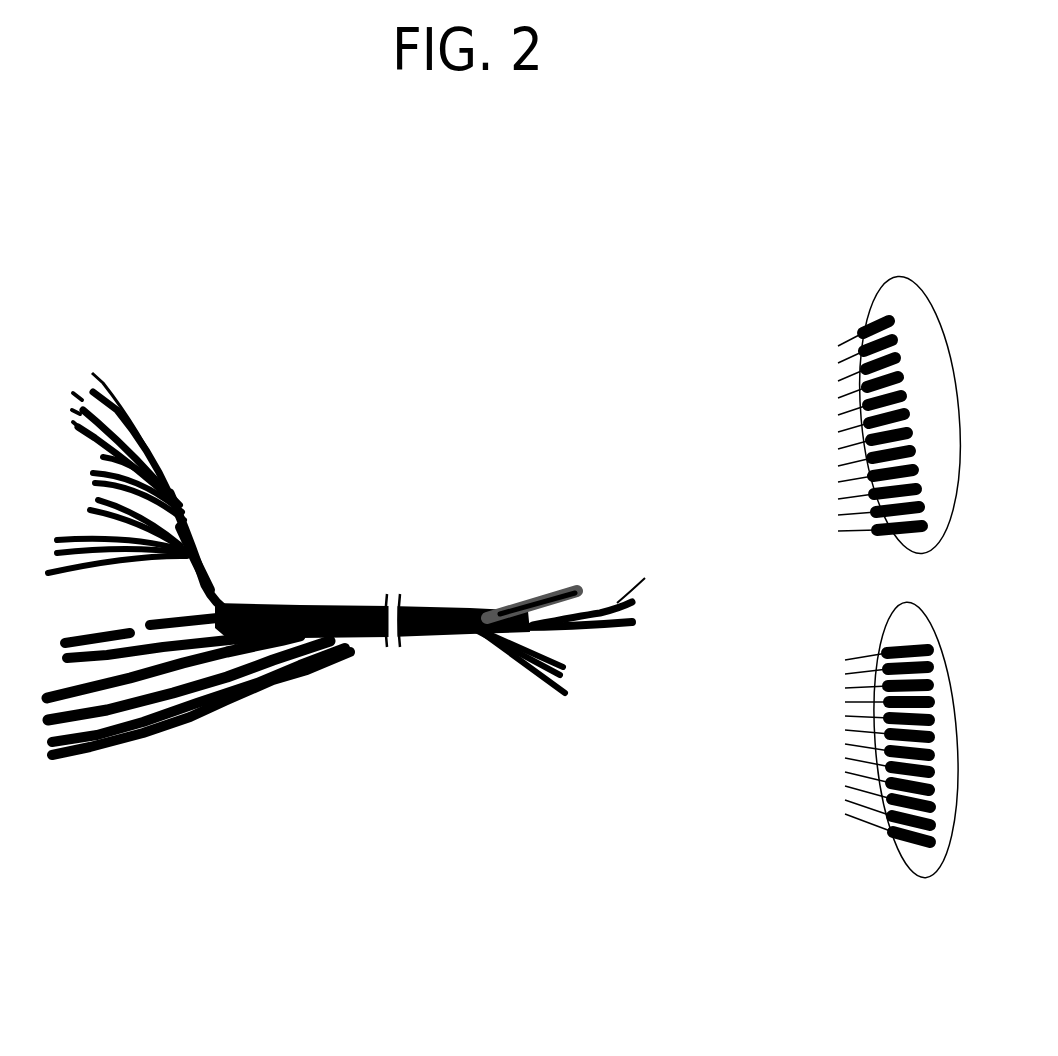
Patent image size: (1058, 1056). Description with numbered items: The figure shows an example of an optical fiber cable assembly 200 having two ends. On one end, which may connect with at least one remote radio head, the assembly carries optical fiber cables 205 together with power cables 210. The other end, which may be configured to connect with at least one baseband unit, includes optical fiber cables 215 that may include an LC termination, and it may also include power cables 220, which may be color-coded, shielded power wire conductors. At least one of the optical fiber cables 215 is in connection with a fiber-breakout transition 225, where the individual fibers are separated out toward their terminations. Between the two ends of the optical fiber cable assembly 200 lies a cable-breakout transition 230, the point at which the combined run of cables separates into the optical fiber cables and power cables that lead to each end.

The optical fiber cable assembly 200 is at (509, 550).
The optical fiber cables 205 is at (133, 433).
The power cables 210 is at (163, 708).
The optical fiber cables 215 is at (752, 410).
The power cables 220 is at (557, 593).
The fiber-breakout transition 225 is at (620, 632).
The cable-breakout transition 230 is at (310, 638).